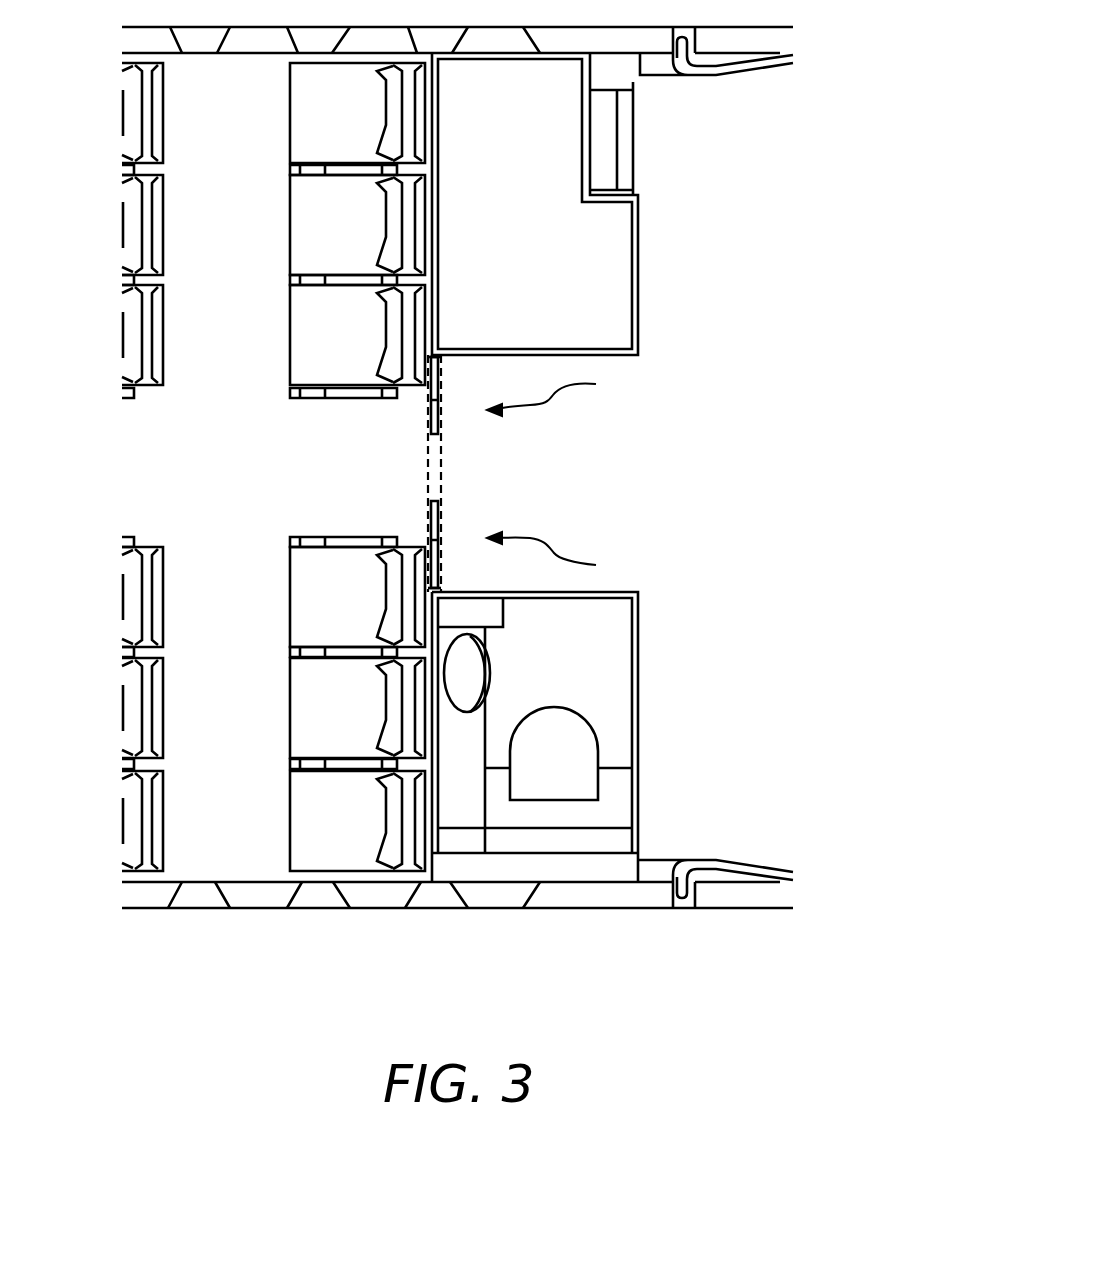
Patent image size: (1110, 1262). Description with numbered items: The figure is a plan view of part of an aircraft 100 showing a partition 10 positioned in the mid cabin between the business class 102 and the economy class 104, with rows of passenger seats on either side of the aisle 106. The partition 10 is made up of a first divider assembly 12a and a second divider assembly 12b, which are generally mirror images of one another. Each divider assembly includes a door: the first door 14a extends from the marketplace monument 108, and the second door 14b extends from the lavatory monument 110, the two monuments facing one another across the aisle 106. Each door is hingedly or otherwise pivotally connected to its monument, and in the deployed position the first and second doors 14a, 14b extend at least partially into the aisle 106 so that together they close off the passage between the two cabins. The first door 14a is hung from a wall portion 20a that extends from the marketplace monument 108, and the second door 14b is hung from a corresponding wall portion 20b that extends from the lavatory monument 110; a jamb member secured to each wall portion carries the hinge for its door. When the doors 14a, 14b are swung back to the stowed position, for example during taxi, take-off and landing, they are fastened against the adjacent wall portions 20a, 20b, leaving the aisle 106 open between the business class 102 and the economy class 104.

The partition 10 is at (440, 446).
The first divider assembly 12a is at (566, 394).
The second divider assembly 12b is at (567, 557).
The first door 14a is at (428, 420).
The second door 14b is at (428, 520).
The first wall portion 20a is at (440, 374).
The second wall portion 20b is at (440, 570).
The aircraft 100 is at (203, 893).
The business class 102 is at (184, 479).
The economy class 104 is at (722, 432).
The aisle 106 is at (622, 522).
The marketplace monument 108 is at (555, 286).
The lavatory monument 110 is at (595, 666).